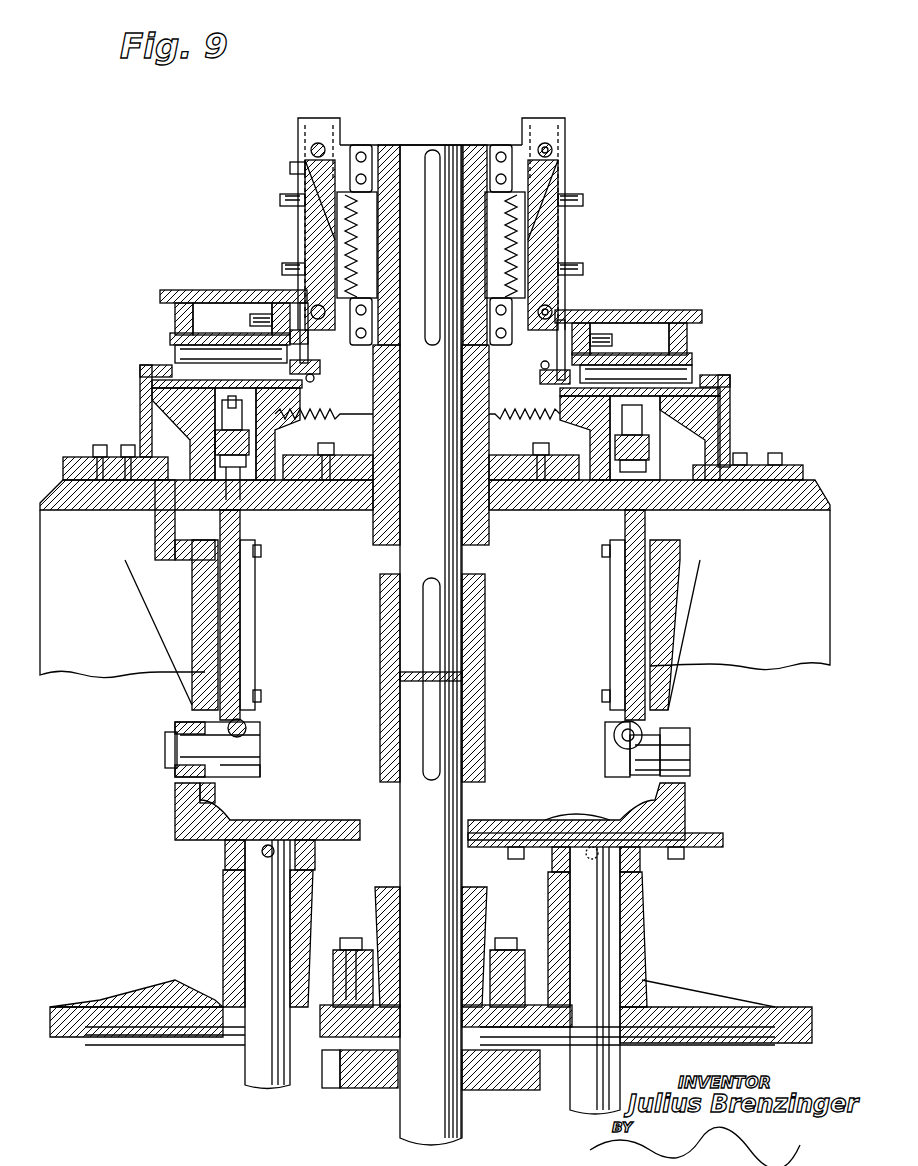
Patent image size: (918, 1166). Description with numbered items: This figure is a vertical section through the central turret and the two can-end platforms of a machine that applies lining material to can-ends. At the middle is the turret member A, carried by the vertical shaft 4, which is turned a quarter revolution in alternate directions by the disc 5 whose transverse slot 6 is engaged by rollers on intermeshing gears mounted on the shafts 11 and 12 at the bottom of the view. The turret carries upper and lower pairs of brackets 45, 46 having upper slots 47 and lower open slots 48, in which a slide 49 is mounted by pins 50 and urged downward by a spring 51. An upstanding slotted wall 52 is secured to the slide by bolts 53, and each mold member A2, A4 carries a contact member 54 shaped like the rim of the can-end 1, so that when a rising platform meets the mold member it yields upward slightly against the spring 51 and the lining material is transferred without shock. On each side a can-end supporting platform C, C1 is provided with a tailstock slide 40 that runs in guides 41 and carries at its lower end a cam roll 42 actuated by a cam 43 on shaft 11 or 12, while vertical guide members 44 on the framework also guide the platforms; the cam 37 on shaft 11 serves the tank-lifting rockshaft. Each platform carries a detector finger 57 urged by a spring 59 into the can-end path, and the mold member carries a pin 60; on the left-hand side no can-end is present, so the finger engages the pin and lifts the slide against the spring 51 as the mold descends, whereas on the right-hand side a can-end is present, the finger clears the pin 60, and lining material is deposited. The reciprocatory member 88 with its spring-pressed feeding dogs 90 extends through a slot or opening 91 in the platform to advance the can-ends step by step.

The can-end 1 is at (680, 375).
The shaft 4 is at (431, 645).
The disc 5 is at (365, 1080).
The transverse slot or guideway 6 is at (330, 1076).
The shaft 11 is at (590, 922).
The shaft 12 is at (260, 910).
The cam 37 is at (585, 812).
The slide 40 is at (240, 633).
The guides 41 is at (258, 600).
The cam roll 42 is at (178, 725).
The cam 43 is at (178, 795).
The vertical guide members 44 is at (140, 378).
The upper brackets 45 is at (350, 145).
The lower brackets 46 is at (372, 320).
The upper slots 47 is at (300, 128).
The lower open slots 48 is at (575, 270).
The slide 49 is at (560, 240).
The pins 50 is at (540, 155).
The spring 51 is at (431, 245).
The upstanding slotted wall 52 is at (292, 182).
The bolts 53 is at (280, 200).
The contact member 54 is at (170, 350).
The detector finger 57 is at (430, 367).
The spring 59 is at (417, 427).
The pin 60 is at (262, 320).
The reciprocatory member 88 is at (222, 410).
The spring-pressed feeding dogs 90 is at (230, 396).
The slot or opening 91 is at (754, 396).
The turret member A is at (404, 135).
The mold member A2 is at (220, 290).
The mold member A4 is at (660, 310).
The can-end supporting platform C is at (739, 373).
The can-end supporting platform C1 is at (138, 354).